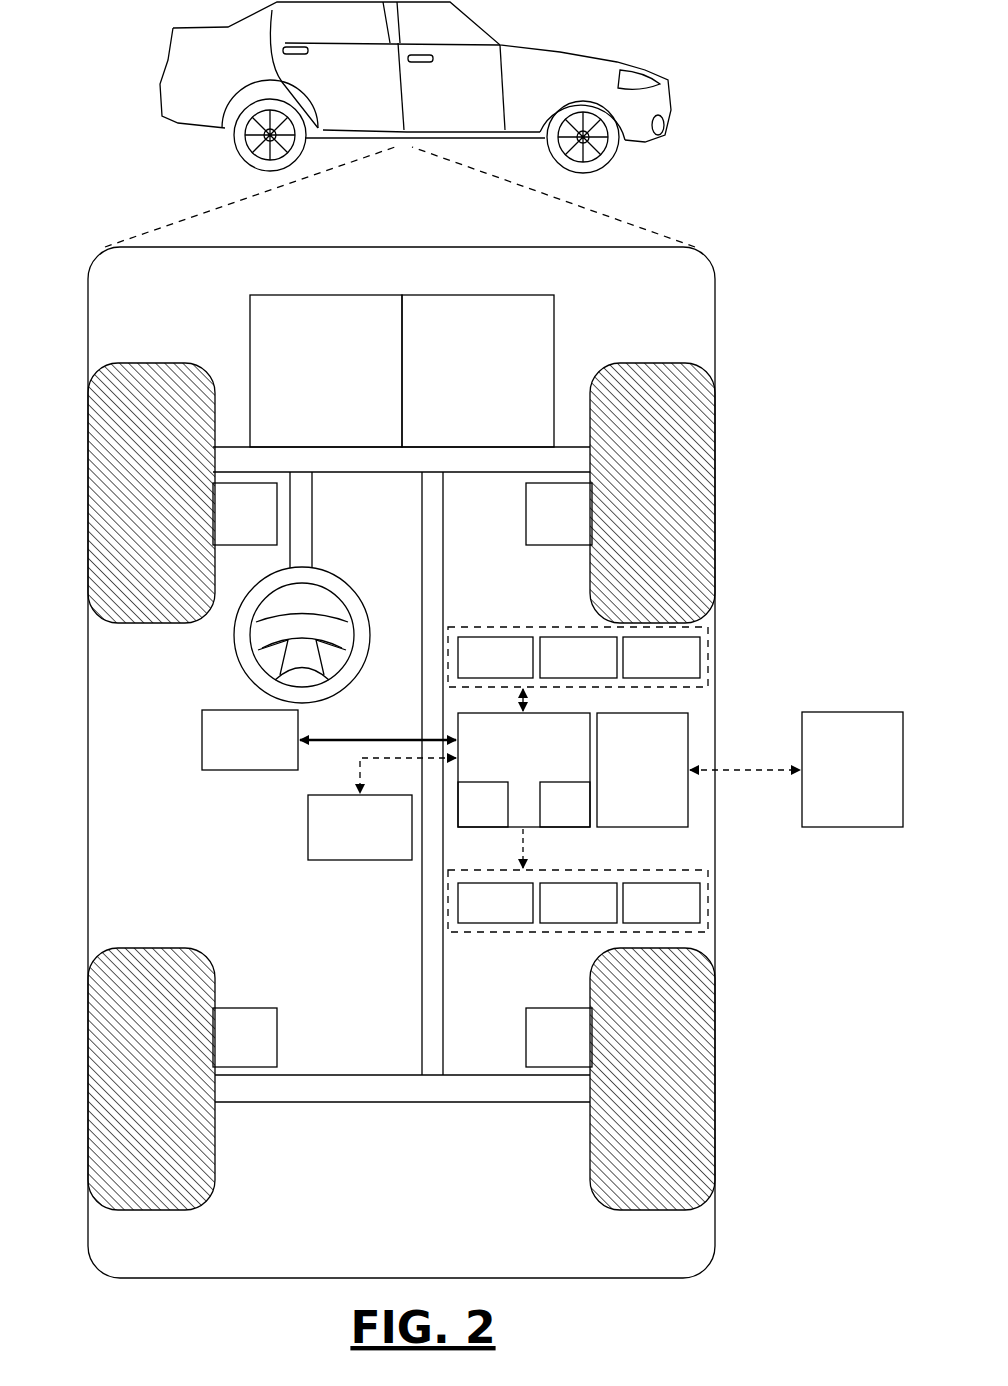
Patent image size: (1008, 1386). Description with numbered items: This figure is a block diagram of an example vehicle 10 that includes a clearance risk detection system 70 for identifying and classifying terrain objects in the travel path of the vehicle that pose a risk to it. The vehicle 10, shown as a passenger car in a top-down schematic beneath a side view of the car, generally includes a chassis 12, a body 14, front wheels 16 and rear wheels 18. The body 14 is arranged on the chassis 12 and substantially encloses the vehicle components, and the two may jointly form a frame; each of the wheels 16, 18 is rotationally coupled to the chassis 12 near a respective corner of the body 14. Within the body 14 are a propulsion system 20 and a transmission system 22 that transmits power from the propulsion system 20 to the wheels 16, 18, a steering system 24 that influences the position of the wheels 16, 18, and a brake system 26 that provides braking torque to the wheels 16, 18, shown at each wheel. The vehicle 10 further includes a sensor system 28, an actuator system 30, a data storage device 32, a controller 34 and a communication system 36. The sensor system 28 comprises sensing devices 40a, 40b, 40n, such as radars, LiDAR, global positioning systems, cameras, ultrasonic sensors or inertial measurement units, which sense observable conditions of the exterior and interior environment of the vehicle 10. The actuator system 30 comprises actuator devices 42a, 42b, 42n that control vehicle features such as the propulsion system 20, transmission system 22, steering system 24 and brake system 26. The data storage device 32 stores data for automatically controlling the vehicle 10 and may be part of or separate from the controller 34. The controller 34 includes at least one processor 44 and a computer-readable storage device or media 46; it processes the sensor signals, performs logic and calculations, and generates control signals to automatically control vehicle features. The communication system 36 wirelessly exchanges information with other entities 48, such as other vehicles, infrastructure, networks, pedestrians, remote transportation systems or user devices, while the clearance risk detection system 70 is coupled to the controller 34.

The vehicle 10 is at (153, 80).
The chassis 12 is at (420, 913).
The body 14 is at (88, 723).
The front wheels 16 is at (152, 363).
The rear wheels 18 is at (150, 1212).
The propulsion system 20 is at (326, 371).
The transmission system 22 is at (478, 371).
The steering system 24 is at (326, 541).
The brake system 26 is at (402, 775).
The sensor system 28 is at (538, 625).
The actuator system 30 is at (542, 935).
The data storage device 32 is at (382, 809).
The controller 34 is at (524, 770).
The communication system 36 is at (642, 770).
The sensing device 40a is at (495, 657).
The sensing device 40b is at (578, 657).
The sensing device 40n is at (661, 657).
The actuator device 42a is at (495, 903).
The actuator device 42b is at (578, 903).
The actuator device 42n is at (661, 903).
The processor 44 is at (483, 804).
The computer-readable storage device or media 46 is at (565, 804).
The other entities 48 is at (796, 769).
The clearance risk detection system 70 is at (250, 740).